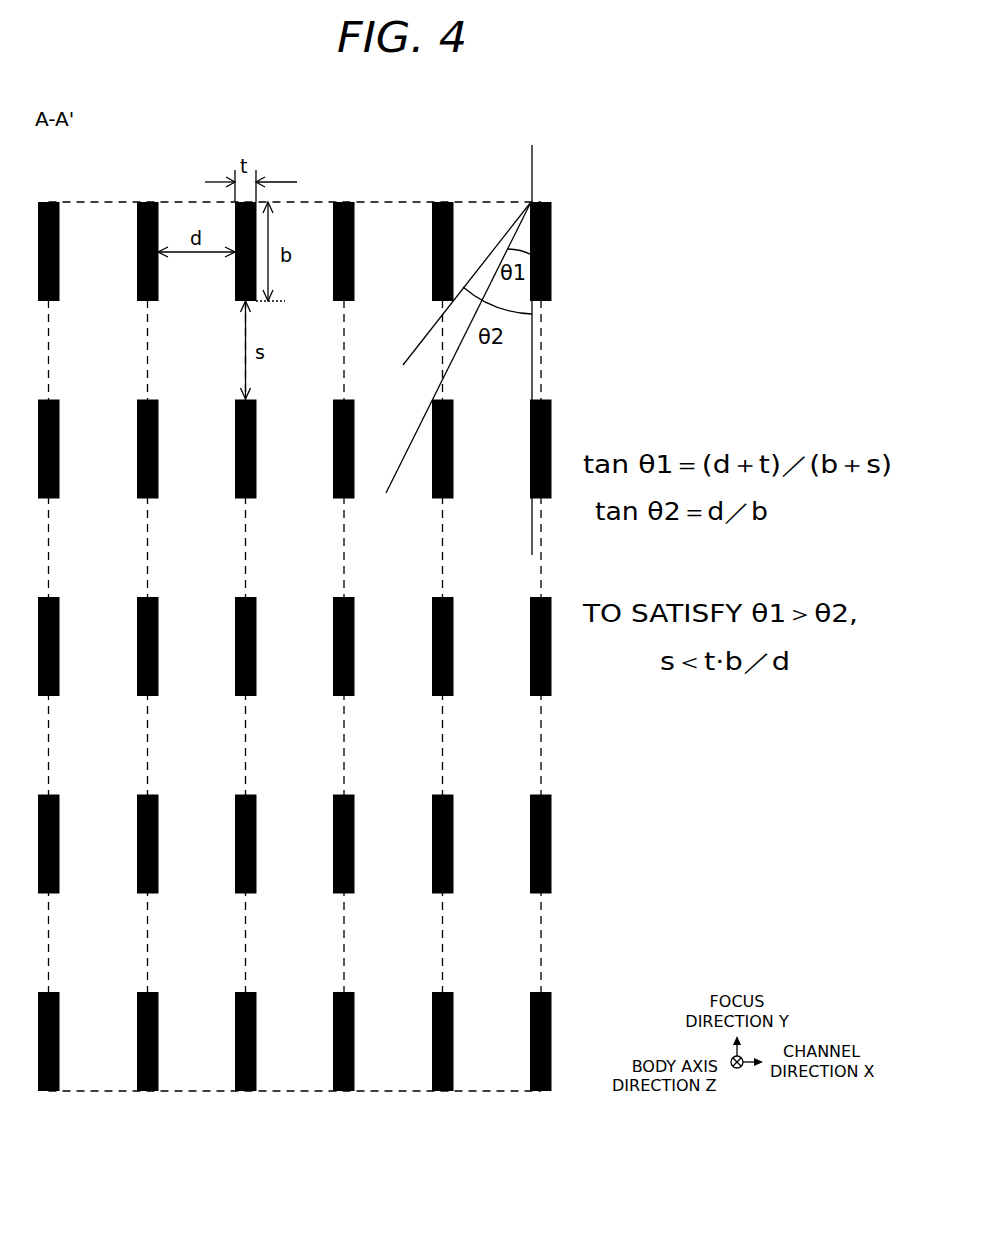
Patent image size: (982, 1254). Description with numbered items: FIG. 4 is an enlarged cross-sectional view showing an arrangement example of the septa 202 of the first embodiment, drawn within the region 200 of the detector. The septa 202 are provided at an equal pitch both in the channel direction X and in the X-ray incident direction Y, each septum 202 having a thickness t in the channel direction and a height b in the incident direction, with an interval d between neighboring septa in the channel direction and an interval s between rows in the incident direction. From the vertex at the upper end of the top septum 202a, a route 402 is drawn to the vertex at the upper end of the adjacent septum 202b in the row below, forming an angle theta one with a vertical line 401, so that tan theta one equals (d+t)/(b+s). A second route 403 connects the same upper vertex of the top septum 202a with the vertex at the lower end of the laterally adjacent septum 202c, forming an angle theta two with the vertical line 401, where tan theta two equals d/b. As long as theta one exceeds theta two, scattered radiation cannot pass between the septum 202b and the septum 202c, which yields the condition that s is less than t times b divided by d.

The transducer array 200 is at (106, 202).
The septum 202 is at (47, 202).
The top septum 202a is at (540, 202).
The adjacent septum in a row below 202b is at (453, 478).
The adjacent septum 202c is at (438, 202).
The vertical line 401 is at (532, 323).
The route 402 is at (449, 367).
The route 403 is at (490, 248).